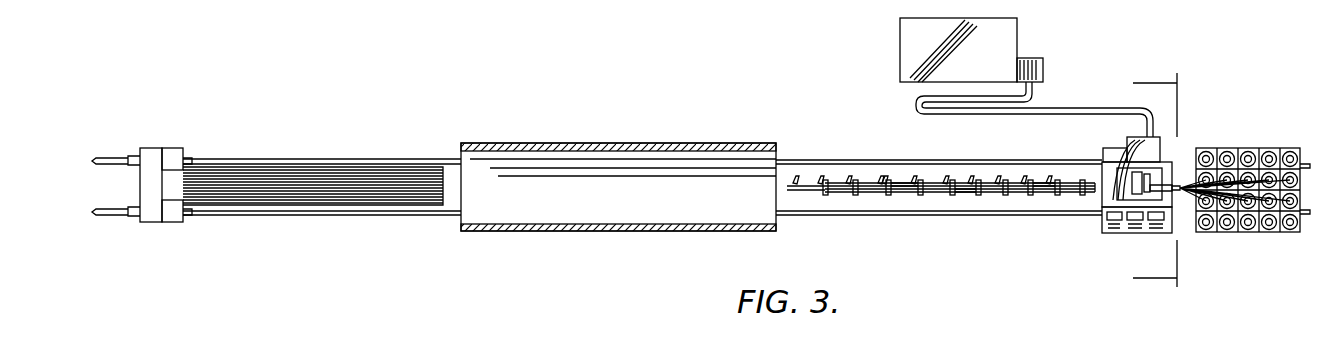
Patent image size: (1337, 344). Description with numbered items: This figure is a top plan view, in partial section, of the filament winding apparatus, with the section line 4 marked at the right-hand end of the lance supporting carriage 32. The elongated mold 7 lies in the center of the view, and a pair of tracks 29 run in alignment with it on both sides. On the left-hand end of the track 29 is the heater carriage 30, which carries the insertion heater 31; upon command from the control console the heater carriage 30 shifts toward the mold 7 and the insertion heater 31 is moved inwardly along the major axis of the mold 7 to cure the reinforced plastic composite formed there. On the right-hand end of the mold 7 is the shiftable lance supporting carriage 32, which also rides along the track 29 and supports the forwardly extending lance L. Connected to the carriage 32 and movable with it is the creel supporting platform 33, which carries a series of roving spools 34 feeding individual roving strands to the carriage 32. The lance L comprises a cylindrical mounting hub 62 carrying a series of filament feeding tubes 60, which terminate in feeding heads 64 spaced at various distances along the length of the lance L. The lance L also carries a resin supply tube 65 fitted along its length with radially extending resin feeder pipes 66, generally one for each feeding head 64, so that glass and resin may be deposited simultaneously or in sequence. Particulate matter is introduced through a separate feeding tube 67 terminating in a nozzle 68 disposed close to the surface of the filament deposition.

The section line 4- 4 is at (1143, 182).
The mold 7 is at (665, 143).
The tracks 29 is at (287, 216).
The heater carriage 30 is at (152, 148).
The insertion heater 31 is at (380, 176).
The lance supporting carriage 32 is at (1127, 235).
The creel supporting platform 33 is at (1233, 150).
The roving spools 34 is at (1267, 233).
The filament feeding tube 60 is at (901, 198).
The cylindrical mounting hub 62 is at (1030, 197).
The feeding heads 64 is at (850, 176).
The resin supply tube 65 is at (959, 184).
The resin feeder pipes 66 is at (1042, 178).
The feeding tube 67 is at (901, 182).
The nozzle 68 is at (886, 176).
The lance L is at (910, 207).